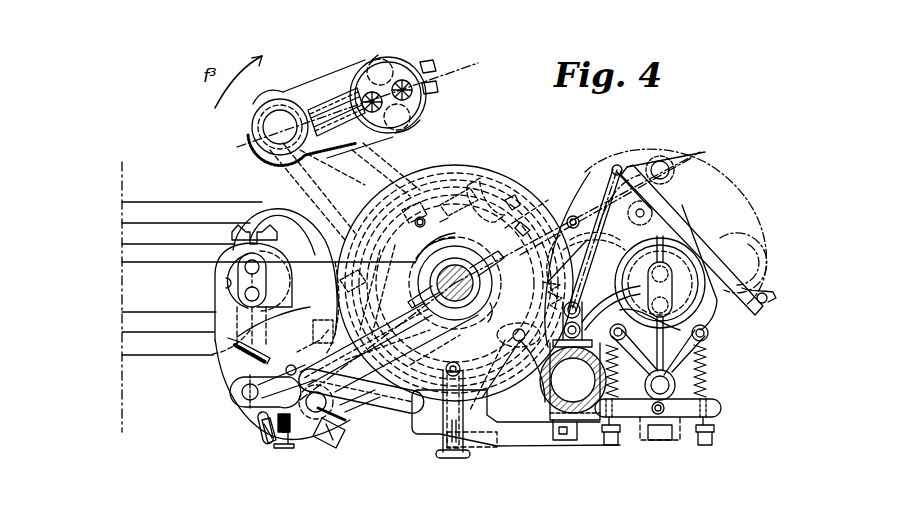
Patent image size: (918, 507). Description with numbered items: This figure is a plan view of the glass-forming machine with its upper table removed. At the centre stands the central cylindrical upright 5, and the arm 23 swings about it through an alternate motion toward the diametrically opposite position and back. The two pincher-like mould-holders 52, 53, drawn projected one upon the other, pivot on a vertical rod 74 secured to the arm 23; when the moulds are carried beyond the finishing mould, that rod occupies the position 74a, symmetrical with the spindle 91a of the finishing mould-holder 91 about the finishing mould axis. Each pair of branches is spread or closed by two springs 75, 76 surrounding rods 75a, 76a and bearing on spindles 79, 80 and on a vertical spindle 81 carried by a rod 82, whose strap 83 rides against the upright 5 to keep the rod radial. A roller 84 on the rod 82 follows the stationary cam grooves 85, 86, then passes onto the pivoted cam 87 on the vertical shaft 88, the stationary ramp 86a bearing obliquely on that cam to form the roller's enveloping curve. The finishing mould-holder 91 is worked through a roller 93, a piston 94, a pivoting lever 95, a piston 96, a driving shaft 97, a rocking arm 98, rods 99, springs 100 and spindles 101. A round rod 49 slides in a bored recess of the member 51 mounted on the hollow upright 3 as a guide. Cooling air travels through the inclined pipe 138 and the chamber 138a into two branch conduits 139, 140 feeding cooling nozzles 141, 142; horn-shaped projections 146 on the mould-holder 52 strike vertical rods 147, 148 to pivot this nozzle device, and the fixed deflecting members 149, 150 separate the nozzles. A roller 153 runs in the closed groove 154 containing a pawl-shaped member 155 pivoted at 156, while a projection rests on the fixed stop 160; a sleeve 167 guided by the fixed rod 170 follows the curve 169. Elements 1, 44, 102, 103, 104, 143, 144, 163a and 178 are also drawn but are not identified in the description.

The engine frame center line 1 is at (157, 279).
The upright 3 is at (548, 405).
The central cylindrical upright 5 is at (460, 276).
The arm 23 is at (348, 262).
The pipes 44 is at (205, 222).
The round rod 49 is at (520, 330).
The member 51 is at (504, 375).
The mould-holder 52 is at (215, 338).
The mould-holder 53 is at (230, 345).
The vertical rod 74 is at (240, 385).
The position of the rods 74a is at (665, 175).
The spring 75 is at (282, 360).
The rod 75a is at (240, 385).
The spring 76 is at (292, 440).
The rod 76a is at (262, 415).
The spindle 79 is at (240, 352).
The spindle 80 is at (270, 440).
The vertical spindle 81 is at (305, 345).
The rod 82 is at (316, 390).
The strap 83 is at (442, 244).
The roller 84 is at (400, 290).
The cam groove 85 is at (452, 186).
The cam groove 86 is at (512, 222).
The stationary ramp 86a is at (607, 252).
The cam 87 is at (575, 218).
The vertical shaft 88 is at (575, 305).
The mould-holder 91 is at (690, 362).
The spindle 91a is at (656, 416).
The roller 93 is at (468, 370).
The piston 94 is at (466, 384).
The pivoting lever 95 is at (497, 440).
The piston 96 is at (668, 440).
The driving shaft 97 is at (672, 388).
The rocking arm 98 is at (695, 412).
The rods 99 is at (725, 388).
The springs 100 is at (715, 404).
The spindles 101 is at (708, 340).
The link 102 is at (676, 300).
The cam disc 103 is at (660, 260).
The pivot 104 is at (608, 330).
The inclined pipe 138 is at (335, 214).
The chamber 138a is at (270, 100).
The branch conduit 139 is at (330, 75).
The branch conduit 140 is at (346, 130).
The cooling nozzle 141 is at (398, 70).
The cooling nozzle 142 is at (420, 100).
The cover 143 is at (383, 50).
The flange 144 is at (416, 138).
The horn-shaped projections 146 is at (276, 230).
The vertical rod 147 is at (438, 68).
The vertical rod 148 is at (438, 88).
The fixed deflecting member 149 is at (574, 272).
The fixed deflecting member 150 is at (710, 219).
The roller 153 is at (398, 388).
The groove 154 is at (436, 298).
The pawl-shaped member 155 is at (444, 220).
The pivot 156 is at (423, 217).
The fixed stop 160 is at (490, 300).
The bolt 163a is at (308, 420).
The sleeve 167 is at (378, 410).
The curve 169 is at (338, 392).
The fixed rod 170 is at (334, 416).
The tube 178 is at (320, 108).